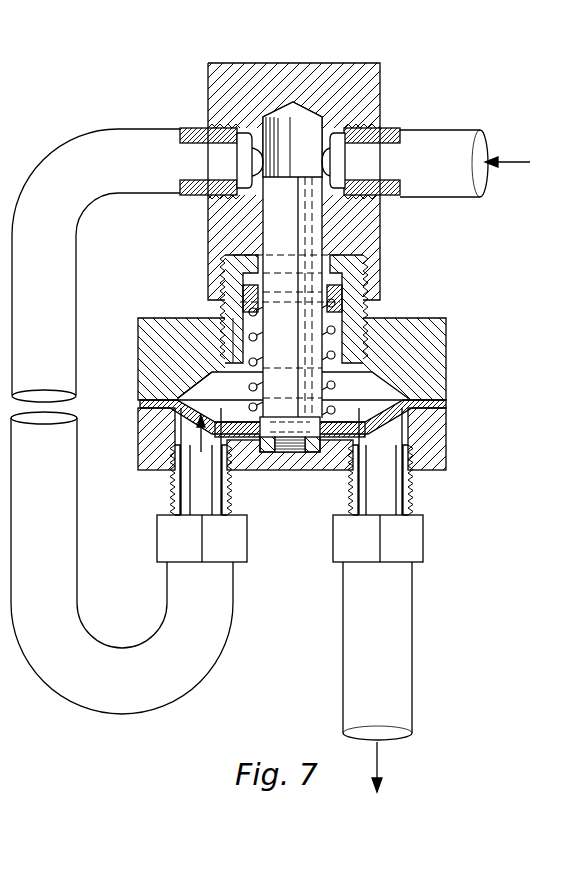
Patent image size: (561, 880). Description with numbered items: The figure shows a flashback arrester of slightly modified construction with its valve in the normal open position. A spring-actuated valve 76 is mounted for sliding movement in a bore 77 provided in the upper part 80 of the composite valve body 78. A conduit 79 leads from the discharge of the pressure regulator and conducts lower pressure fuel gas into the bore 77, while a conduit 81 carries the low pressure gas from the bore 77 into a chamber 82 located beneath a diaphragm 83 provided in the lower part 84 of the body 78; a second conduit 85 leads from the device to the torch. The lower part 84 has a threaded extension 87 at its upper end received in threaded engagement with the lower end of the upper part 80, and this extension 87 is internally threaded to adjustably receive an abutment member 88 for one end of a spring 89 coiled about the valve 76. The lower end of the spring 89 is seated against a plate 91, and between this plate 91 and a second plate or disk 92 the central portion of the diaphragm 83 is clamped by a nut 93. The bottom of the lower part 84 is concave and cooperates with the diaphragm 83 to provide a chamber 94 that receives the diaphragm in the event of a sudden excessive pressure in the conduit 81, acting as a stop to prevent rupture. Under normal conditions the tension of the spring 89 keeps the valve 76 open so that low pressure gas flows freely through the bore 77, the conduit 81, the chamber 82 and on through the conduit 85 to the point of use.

The spring-actuated valve 76 is at (303, 228).
The bore 77 is at (308, 134).
The valve body 78 is at (383, 279).
The conduit 79 is at (456, 137).
The upper part of valve body 80 is at (343, 68).
The conduit 81 is at (134, 140).
The chamber 82 is at (192, 435).
The diaphragm 83 is at (440, 410).
The lower part of valve body 84 is at (447, 300).
The second conduit 85 is at (403, 618).
The threaded extension 87 is at (236, 272).
The abutment member 88 is at (232, 308).
The spring 89 is at (237, 352).
The plate 91 is at (175, 397).
The second plate or disk 92 is at (357, 437).
The nut 93 is at (267, 452).
The chamber 94 is at (368, 387).